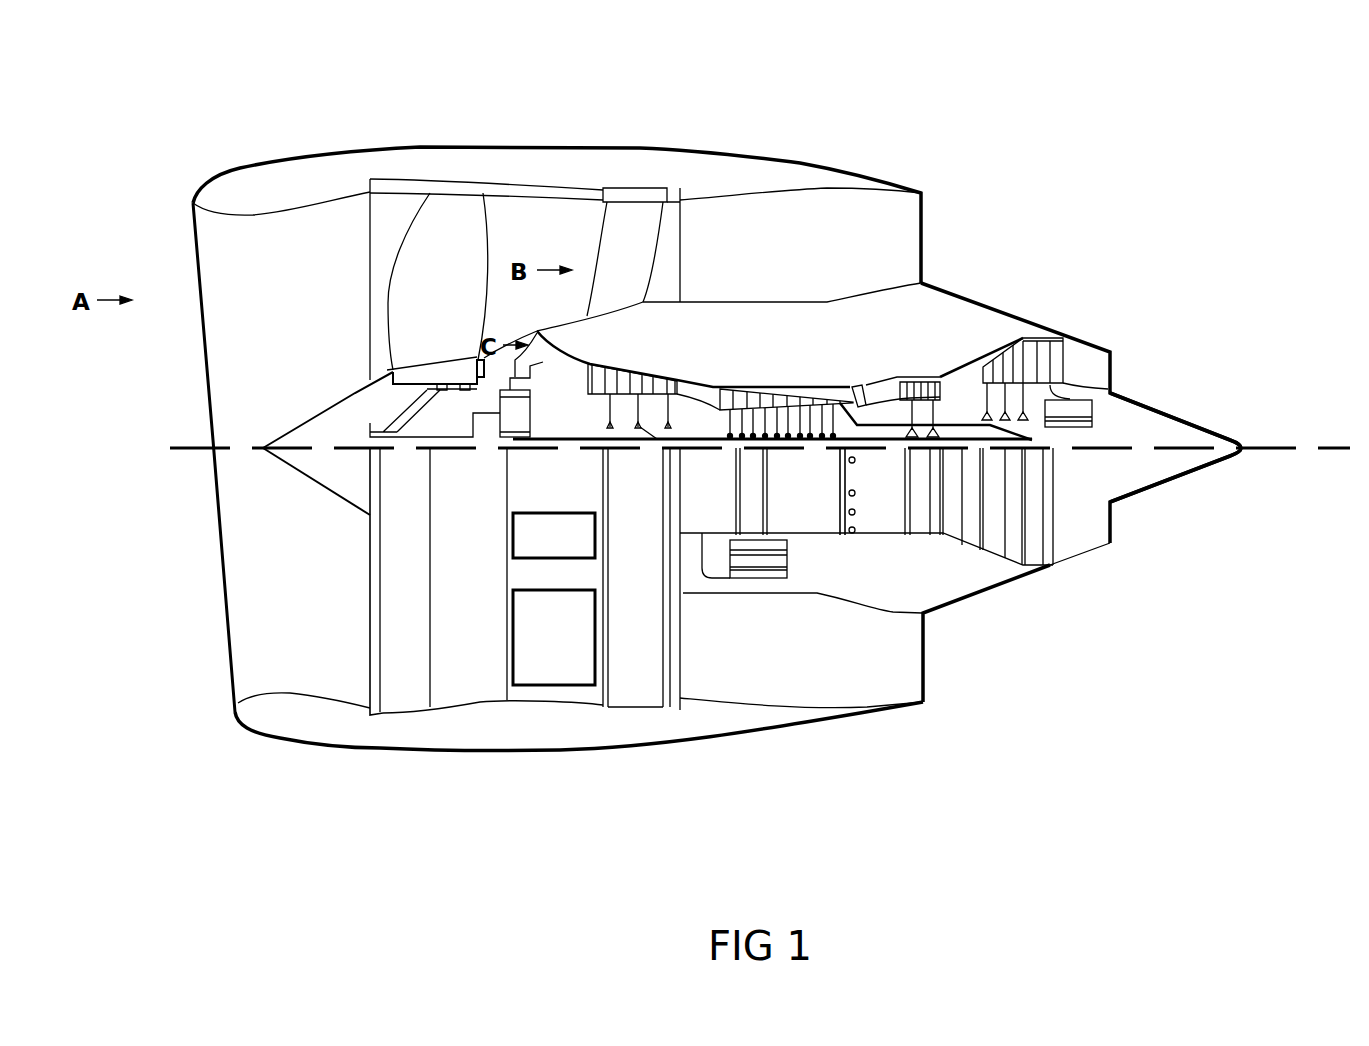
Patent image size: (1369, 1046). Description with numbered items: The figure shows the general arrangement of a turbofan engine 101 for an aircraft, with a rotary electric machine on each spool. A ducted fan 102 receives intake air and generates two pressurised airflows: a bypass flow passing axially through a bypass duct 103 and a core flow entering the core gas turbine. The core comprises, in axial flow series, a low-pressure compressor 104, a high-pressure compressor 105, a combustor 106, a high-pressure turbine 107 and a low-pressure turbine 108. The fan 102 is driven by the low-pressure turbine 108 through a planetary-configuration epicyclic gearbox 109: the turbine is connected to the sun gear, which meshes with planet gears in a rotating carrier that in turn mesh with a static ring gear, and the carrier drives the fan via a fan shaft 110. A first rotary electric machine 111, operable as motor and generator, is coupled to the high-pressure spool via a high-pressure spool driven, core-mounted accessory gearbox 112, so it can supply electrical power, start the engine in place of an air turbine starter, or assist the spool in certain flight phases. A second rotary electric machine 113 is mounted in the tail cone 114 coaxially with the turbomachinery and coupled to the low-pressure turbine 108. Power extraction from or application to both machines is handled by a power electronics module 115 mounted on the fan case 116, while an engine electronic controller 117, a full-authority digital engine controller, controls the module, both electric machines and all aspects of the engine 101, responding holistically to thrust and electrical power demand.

The engine 101 is at (270, 80).
The ducted fan 102 is at (461, 320).
The bypass duct 103 is at (566, 242).
The low-pressure compressor 104 is at (645, 360).
The high-pressure compressor 105 is at (772, 378).
The combustor 106 is at (869, 366).
The high-pressure turbine 107 is at (924, 366).
The low-pressure turbine 108 is at (1016, 328).
The epicyclic gearbox 109 is at (540, 424).
The fan shaft 110 is at (427, 437).
The first rotary electric machine 111 is at (788, 570).
The accessory gearbox 112 is at (707, 547).
The second rotary electric machine 113 is at (1083, 398).
The tail cone 114 is at (1180, 417).
The power electronics module (PEM) 115 is at (512, 635).
The fan case 116 is at (387, 607).
The engine electronic controller (EEC) 117 is at (512, 547).